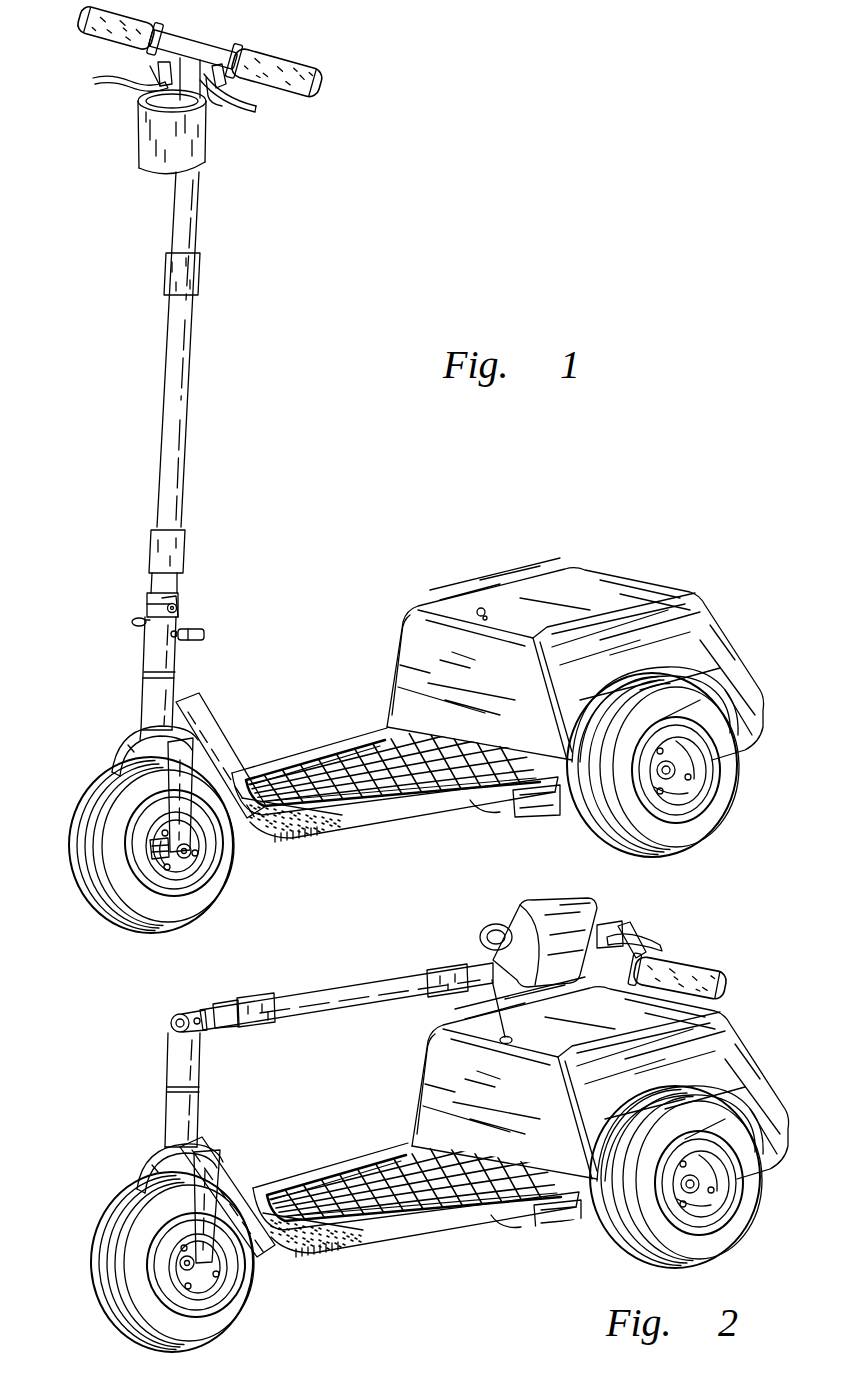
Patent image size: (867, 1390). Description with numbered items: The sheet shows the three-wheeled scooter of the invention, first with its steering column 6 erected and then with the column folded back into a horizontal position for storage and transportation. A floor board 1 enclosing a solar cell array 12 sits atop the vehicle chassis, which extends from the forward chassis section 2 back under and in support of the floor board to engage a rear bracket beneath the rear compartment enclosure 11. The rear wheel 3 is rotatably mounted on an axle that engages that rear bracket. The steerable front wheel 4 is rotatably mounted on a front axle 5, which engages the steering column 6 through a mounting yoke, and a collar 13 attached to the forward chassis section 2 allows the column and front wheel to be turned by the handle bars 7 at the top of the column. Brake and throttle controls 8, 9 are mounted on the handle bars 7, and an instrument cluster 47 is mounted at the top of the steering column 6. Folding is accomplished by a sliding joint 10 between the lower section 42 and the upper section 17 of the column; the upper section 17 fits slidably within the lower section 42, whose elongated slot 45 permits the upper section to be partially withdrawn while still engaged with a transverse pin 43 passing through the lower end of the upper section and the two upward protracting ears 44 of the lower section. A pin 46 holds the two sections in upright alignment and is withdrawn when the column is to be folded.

In FIG. 1, the floor board 1 is at (395, 781).
In FIG. 2, the floor board 1 is at (417, 1190).
In FIG. 1, the forward chassis section 2 is at (187, 712).
In FIG. 2, the forward chassis section 2 is at (227, 1158).
In FIG. 1, the rear wheel 3 is at (728, 796).
In FIG. 2, the rear wheel 3 is at (751, 1201).
In FIG. 1, the front wheel 4 is at (72, 876).
In FIG. 2, the front wheel 4 is at (123, 1198).
In FIG. 1, the front axle 5 is at (190, 845).
In FIG. 1, the steering column 6 is at (170, 451).
In FIG. 2, the steering column 6 is at (347, 1022).
In FIG. 1, the handle bars 7 is at (195, 44).
In FIG. 2, the handle bars 7 is at (601, 928).
In FIG. 1, the brake and throttle control 8 is at (252, 112).
In FIG. 1, the brake and throttle control 9 is at (96, 84).
In FIG. 1, the sliding joint 10 is at (167, 586).
In FIG. 2, the sliding joint 10 is at (160, 1006).
In FIG. 1, the rear compartment enclosure 11 is at (567, 598).
In FIG. 2, the rear compartment enclosure 11 is at (741, 1067).
In FIG. 1, the solar cell array 12 is at (370, 795).
In FIG. 2, the solar cell array 12 is at (412, 1210).
In FIG. 1, the collar 13 is at (142, 689).
In FIG. 1, the upper section of the steering column 17 is at (156, 389).
In FIG. 1, the lower section of the steering column 42 is at (186, 656).
In FIG. 2, the lower section of the steering column 42 is at (158, 1054).
In FIG. 1, the transverse pin 43 is at (178, 608).
In FIG. 1, the upward protracting ears 44 is at (176, 598).
In FIG. 1, the elongated slot 45 is at (134, 617).
In FIG. 1, the pin 46 is at (206, 633).
In FIG. 1, the instrument cluster 47 is at (136, 180).